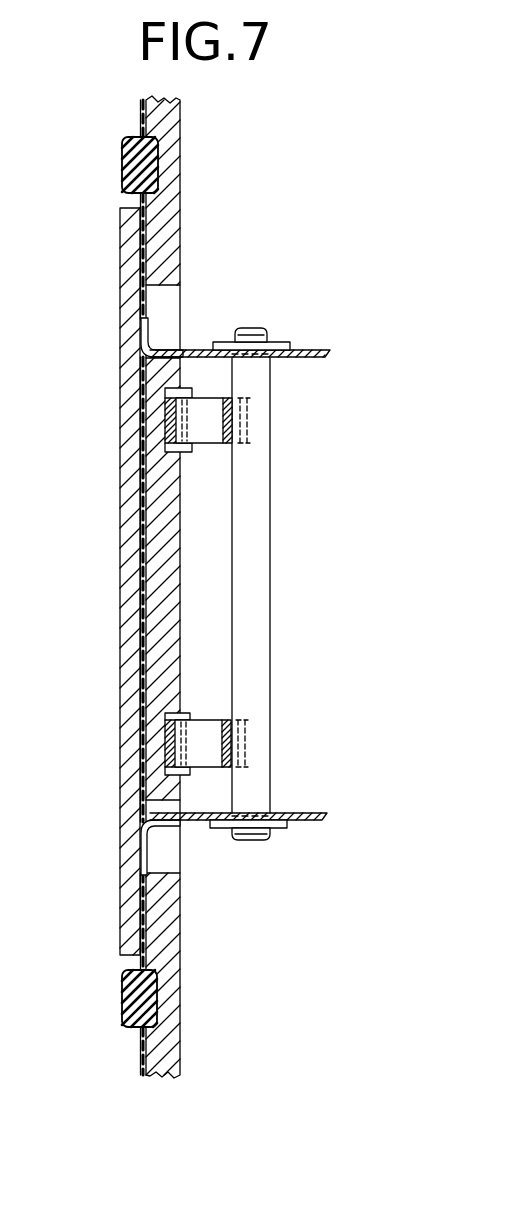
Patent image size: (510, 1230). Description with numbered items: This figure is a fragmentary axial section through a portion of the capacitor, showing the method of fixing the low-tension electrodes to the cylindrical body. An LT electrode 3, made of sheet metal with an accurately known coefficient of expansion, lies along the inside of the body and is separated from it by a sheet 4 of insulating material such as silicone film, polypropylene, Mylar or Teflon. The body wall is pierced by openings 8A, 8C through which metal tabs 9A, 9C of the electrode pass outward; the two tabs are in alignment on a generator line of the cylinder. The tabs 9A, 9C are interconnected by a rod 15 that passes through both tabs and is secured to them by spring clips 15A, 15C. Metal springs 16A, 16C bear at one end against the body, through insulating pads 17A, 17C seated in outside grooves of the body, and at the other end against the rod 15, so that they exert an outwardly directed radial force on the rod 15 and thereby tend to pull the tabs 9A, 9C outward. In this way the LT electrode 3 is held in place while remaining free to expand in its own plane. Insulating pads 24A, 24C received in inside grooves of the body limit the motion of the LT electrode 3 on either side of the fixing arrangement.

The LT electrode 3 is at (128, 678).
The sheet of insulating material 4 is at (145, 644).
The opening 8A is at (172, 308).
The opening 8C is at (163, 850).
The metal tab 9A is at (328, 350).
The metal tab 9C is at (323, 821).
The rod 15 is at (247, 522).
The spring clip 15A is at (281, 347).
The spring clip 15C is at (283, 832).
The metal spring 16A is at (210, 448).
The metal spring 16C is at (203, 723).
The insulating pad 17A is at (166, 411).
The insulating pad 17C is at (164, 742).
The insulating pad 24A is at (126, 184).
The insulating pad 24C is at (137, 1012).